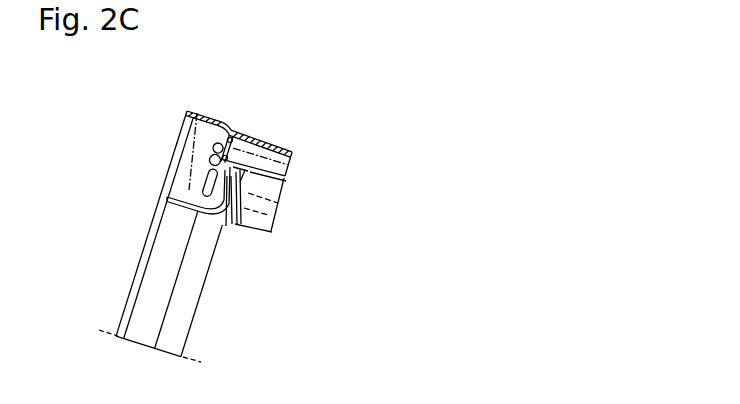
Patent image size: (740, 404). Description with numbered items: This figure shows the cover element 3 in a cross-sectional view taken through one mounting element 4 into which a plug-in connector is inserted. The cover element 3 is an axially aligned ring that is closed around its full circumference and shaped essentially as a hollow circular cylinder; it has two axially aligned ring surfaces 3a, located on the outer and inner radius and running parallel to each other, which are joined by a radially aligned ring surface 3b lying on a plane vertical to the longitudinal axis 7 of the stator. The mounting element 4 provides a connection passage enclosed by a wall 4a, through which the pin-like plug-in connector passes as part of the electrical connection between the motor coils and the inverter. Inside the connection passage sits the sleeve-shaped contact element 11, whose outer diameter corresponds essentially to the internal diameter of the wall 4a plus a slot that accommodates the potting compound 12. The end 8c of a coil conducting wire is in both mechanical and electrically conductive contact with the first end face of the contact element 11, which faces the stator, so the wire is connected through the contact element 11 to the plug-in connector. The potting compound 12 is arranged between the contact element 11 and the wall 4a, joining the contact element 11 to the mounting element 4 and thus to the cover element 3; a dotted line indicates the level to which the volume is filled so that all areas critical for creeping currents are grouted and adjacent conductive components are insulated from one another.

The cover element 3 is at (268, 110).
The axially aligned ring surface 3a is at (197, 108).
The radially aligned ring surface 3b is at (198, 309).
The mounting element 4 is at (288, 150).
The wall 4a is at (277, 207).
The longitudinal axis 7 is at (109, 338).
The end of conducting wire 8c is at (213, 147).
The contact element 11 is at (291, 164).
The potting compound 12 is at (188, 186).